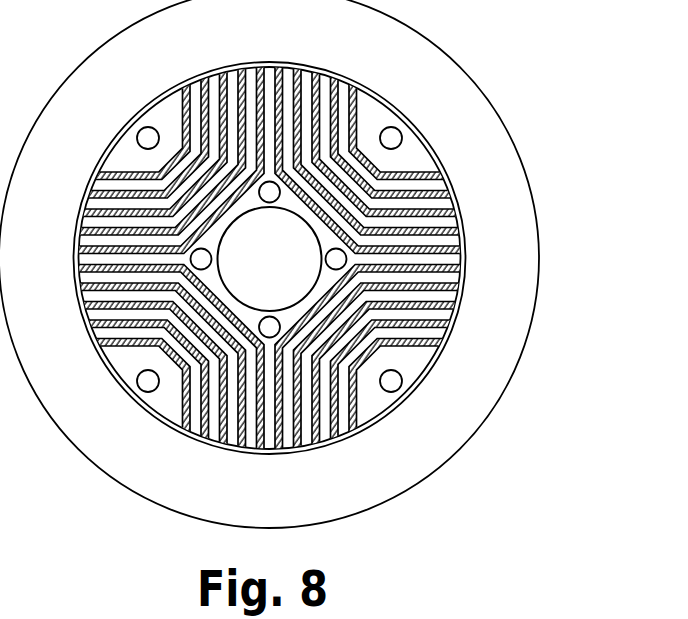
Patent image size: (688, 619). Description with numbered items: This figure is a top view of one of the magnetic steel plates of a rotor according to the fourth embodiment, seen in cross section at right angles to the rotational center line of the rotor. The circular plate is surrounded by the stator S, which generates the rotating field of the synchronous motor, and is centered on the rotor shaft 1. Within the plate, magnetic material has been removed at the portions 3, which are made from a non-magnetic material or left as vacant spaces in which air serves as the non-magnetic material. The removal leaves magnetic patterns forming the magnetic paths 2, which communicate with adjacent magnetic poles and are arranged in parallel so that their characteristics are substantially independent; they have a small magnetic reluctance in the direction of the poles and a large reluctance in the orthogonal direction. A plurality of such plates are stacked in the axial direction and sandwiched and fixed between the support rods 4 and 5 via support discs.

The stator S is at (427, 57).
The rotor shaft 1 is at (298, 261).
The magnetic paths 2 is at (265, 72).
The portions of removed magnetic material 3 is at (234, 72).
The support rods 4 is at (139, 132).
The support rods 5 is at (274, 181).